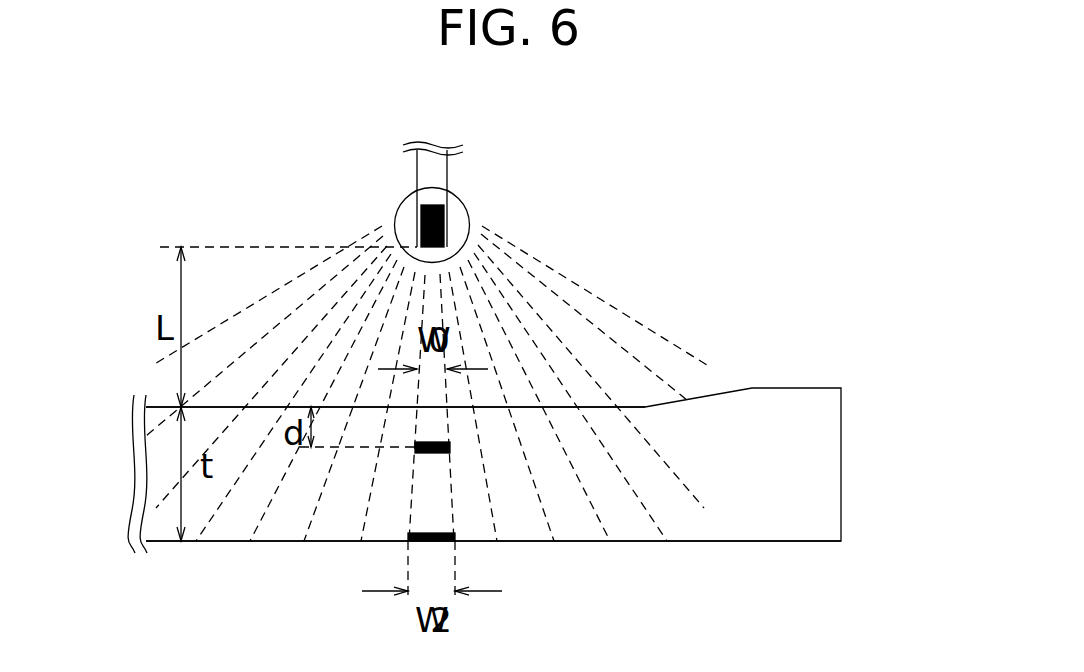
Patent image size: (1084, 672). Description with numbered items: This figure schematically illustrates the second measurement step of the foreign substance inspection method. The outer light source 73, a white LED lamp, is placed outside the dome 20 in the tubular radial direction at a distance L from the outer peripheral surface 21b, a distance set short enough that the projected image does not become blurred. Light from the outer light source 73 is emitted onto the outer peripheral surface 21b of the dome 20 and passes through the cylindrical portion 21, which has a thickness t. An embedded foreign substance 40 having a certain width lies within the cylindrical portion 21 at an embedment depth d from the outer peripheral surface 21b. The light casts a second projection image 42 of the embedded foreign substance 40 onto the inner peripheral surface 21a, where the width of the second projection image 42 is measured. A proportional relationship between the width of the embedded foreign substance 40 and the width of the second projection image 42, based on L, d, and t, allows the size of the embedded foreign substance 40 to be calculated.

The outer light source 73 is at (417, 181).
The cylindrical portion 21 is at (857, 432).
The dome 20 is at (521, 429).
The outer peripheral surface 21b is at (598, 407).
The inner peripheral surface 21a is at (590, 541).
The embedded foreign substance 40 is at (449, 442).
The second projection image 42 is at (418, 541).